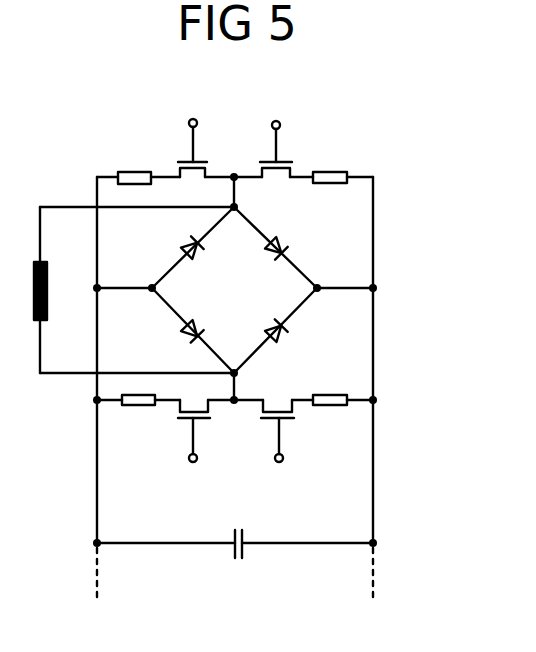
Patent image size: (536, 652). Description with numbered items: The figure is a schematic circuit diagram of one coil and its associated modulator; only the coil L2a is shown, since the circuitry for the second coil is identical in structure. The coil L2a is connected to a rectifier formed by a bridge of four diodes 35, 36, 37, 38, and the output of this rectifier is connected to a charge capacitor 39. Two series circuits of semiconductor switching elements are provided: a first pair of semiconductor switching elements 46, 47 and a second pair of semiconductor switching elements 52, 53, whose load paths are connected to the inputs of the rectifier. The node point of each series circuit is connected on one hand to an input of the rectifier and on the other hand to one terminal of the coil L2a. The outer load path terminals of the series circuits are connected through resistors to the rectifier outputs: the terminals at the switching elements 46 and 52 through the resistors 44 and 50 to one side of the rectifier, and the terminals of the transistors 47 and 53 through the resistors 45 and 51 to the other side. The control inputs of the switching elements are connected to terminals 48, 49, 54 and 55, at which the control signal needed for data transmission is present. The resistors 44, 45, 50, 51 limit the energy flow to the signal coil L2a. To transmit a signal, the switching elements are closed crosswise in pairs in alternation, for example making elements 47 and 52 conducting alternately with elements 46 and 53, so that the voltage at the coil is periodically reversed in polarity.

The coil L2a is at (60, 276).
The diode 35 is at (180, 246).
The diode 36 is at (284, 250).
The diode 37 is at (178, 333).
The diode 38 is at (285, 340).
The charge capacitor 39 is at (240, 565).
The resistor 44 is at (133, 170).
The resistor 45 is at (327, 172).
The semiconductor switching element 46 is at (209, 169).
The semiconductor switching element 47 is at (277, 172).
The terminal 48 is at (189, 121).
The terminal 49 is at (280, 122).
The resistor 50 is at (137, 407).
The resistor 51 is at (326, 406).
The semiconductor switching element 52 is at (181, 426).
The semiconductor switching element 53 is at (266, 426).
The terminal 54 is at (196, 462).
The terminal 55 is at (285, 462).